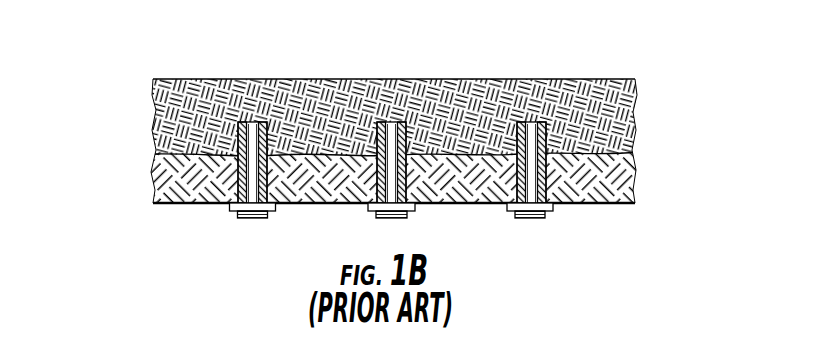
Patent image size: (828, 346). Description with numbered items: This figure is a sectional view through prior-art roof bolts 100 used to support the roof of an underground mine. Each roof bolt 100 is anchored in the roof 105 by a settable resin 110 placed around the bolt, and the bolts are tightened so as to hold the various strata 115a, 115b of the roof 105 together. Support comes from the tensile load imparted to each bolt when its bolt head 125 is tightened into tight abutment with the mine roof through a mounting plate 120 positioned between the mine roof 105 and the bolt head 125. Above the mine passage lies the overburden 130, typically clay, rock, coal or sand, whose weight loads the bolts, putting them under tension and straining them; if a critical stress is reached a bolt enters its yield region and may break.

The roof bolt 100 is at (348, 160).
The roof 105 is at (398, 79).
The settable resin 110 is at (419, 174).
The stratum 115a is at (128, 78).
The stratum 115b is at (235, 212).
The mounting plate 120 is at (554, 207).
The bolt head 125 is at (252, 218).
The overburden 130 is at (620, 65).